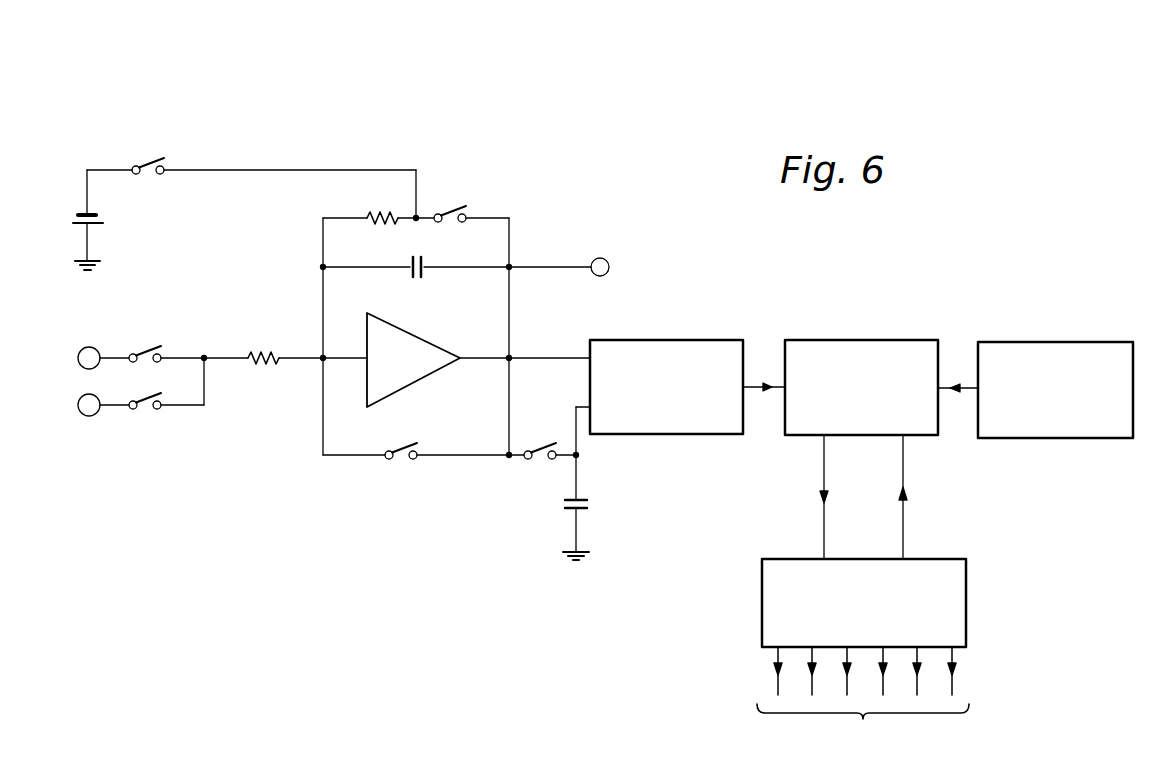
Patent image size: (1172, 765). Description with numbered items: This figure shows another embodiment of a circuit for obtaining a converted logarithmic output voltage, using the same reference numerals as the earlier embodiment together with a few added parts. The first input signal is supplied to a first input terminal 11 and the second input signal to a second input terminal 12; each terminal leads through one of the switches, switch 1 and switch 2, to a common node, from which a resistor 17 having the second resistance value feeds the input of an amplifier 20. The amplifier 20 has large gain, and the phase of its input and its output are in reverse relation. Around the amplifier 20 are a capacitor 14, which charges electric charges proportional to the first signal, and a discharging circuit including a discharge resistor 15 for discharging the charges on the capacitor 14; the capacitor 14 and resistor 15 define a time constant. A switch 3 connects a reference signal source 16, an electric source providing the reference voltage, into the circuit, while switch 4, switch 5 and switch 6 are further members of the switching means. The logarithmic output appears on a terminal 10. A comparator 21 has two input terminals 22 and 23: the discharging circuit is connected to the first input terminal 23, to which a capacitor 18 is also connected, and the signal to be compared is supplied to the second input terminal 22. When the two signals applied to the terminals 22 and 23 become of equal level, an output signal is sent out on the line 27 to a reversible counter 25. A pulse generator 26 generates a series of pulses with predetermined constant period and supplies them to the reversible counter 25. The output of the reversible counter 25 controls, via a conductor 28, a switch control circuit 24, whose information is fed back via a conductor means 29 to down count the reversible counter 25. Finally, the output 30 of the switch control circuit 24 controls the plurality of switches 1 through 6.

The switch 1 is at (138, 348).
The switch 2 is at (148, 412).
The switch 3 is at (145, 164).
The switch 4 is at (454, 206).
The switch 5 is at (400, 460).
The switch 6 is at (540, 462).
The output terminal 10 is at (607, 260).
The first input terminal 11 is at (88, 346).
The second input terminal 12 is at (92, 416).
The capacitor 14 is at (414, 278).
The discharge resistor 15 is at (372, 214).
The reference signal source 16 is at (100, 214).
The resistor 17 is at (262, 346).
The capacitor 18 is at (589, 503).
The amplifier 20 is at (435, 336).
The comparator 21 is at (687, 338).
The second input terminal of the comparator 22 is at (588, 355).
The first input terminal of the comparator 23 is at (588, 406).
The switch control circuit 24 is at (763, 558).
The reversible counter 25 is at (858, 338).
The pulse generator 26 is at (1032, 340).
The line 27 is at (750, 390).
The conductor 28 is at (823, 526).
The conductor means 29 is at (905, 517).
The output of the switch control circuit 30 is at (863, 699).